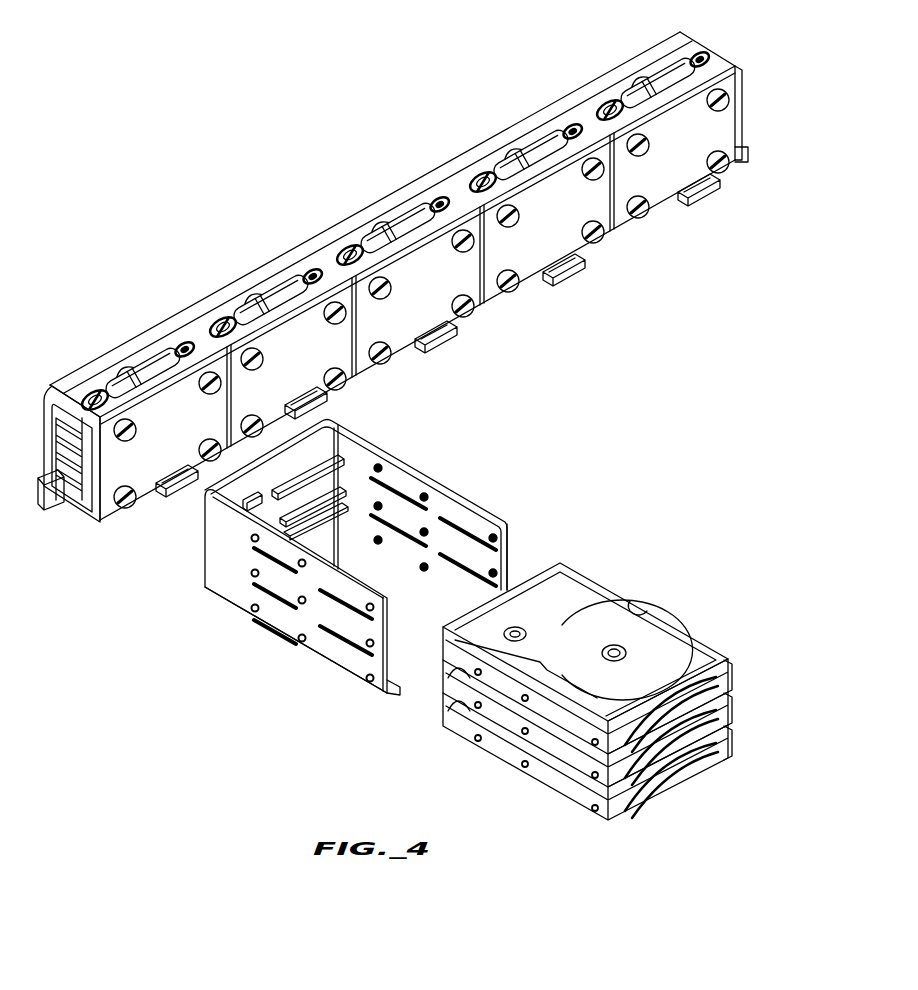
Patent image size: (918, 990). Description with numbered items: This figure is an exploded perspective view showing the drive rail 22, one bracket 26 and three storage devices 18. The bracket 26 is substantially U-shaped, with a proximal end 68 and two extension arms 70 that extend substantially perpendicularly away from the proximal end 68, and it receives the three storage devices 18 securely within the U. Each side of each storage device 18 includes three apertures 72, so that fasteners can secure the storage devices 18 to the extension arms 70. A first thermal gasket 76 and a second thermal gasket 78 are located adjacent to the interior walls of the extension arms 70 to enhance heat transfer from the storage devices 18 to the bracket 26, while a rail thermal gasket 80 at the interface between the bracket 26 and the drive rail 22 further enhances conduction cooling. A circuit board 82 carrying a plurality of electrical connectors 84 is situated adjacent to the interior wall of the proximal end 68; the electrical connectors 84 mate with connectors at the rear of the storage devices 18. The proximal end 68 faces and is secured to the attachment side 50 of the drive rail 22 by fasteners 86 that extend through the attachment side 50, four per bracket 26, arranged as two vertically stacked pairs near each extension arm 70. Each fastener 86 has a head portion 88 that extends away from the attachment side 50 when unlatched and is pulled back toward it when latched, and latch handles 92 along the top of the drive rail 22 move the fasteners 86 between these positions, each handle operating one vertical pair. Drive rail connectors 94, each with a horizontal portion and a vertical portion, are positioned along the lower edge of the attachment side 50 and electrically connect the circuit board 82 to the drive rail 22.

The storage devices 18 is at (695, 640).
The drive rail 22 is at (459, 155).
The bracket 26 is at (468, 500).
The attachment side 50 is at (447, 337).
The proximal end 68 is at (203, 566).
The extension arms 70 is at (498, 519).
The apertures 72 is at (548, 781).
The first thermal gasket 76 is at (474, 520).
The second thermal gasket 78 is at (296, 556).
The rail thermal gasket 80 is at (107, 490).
The circuit board 82 is at (342, 428).
The electrical connectors 84 is at (285, 478).
The fasteners 86 is at (724, 179).
The head portion 88 is at (732, 60).
The latch handles 92 is at (645, 51).
The drive rail connectors 94 is at (578, 273).